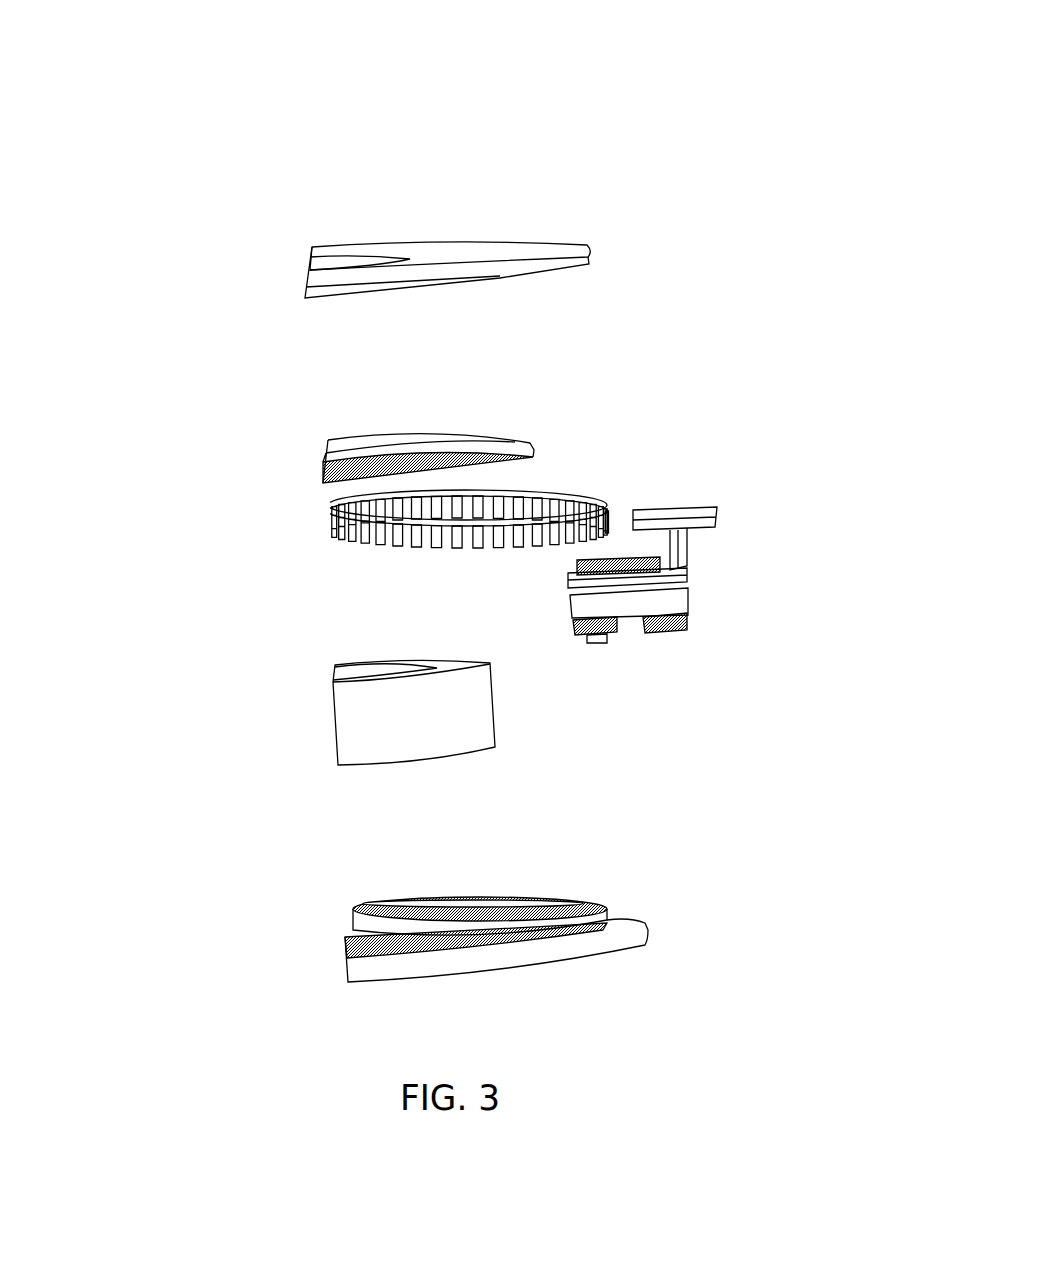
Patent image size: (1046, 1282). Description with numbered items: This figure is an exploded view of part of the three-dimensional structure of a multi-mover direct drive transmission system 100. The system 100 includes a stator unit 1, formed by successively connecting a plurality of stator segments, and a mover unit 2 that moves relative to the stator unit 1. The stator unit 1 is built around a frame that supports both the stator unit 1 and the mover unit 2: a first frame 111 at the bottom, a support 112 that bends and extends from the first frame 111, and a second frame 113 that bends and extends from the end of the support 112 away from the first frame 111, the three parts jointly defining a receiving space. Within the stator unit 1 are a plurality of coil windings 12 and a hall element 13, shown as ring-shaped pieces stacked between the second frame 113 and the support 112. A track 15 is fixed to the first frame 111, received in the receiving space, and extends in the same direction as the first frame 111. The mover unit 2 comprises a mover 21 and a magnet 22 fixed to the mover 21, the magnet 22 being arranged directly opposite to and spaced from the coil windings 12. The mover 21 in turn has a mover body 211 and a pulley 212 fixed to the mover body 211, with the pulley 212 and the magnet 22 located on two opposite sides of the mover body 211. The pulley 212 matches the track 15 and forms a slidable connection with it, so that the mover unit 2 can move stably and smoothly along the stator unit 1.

The multi-mover direct drive transmission system 100 is at (455, 95).
The stator unit 1 is at (165, 313).
The second frame 113 is at (338, 277).
The hall element 13 is at (325, 475).
The coil windings 12 is at (340, 537).
The support 112 is at (357, 720).
The track 15 is at (363, 902).
The first frame 111 is at (358, 972).
The mover unit 2 is at (905, 542).
The magnet 22 is at (660, 562).
The mover 21 is at (852, 585).
The mover body 211 is at (648, 605).
The pulley 212 is at (660, 633).